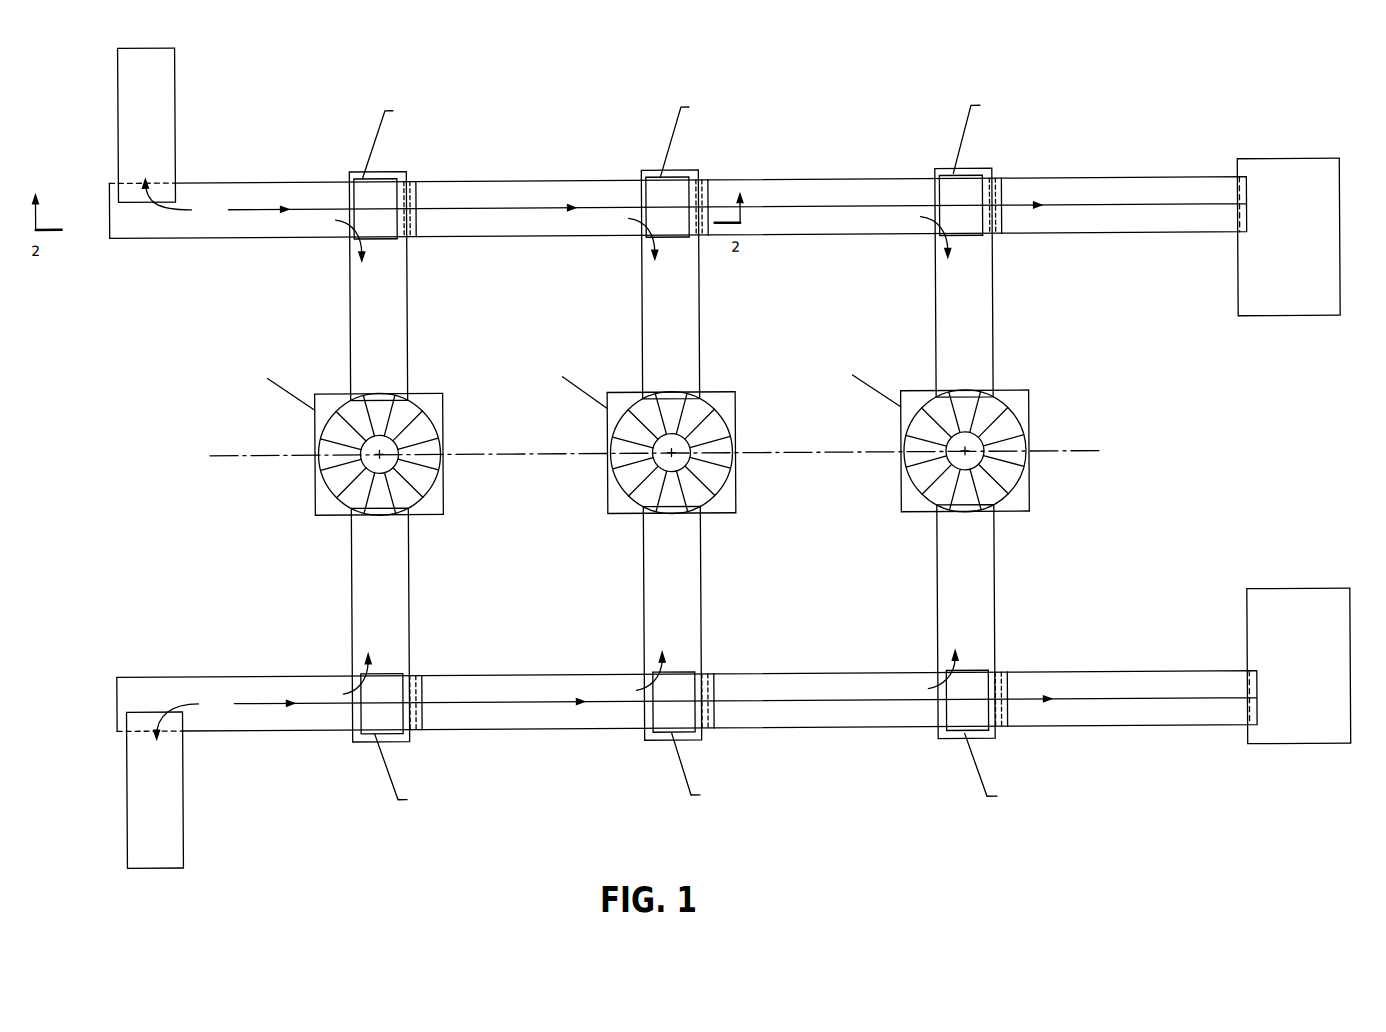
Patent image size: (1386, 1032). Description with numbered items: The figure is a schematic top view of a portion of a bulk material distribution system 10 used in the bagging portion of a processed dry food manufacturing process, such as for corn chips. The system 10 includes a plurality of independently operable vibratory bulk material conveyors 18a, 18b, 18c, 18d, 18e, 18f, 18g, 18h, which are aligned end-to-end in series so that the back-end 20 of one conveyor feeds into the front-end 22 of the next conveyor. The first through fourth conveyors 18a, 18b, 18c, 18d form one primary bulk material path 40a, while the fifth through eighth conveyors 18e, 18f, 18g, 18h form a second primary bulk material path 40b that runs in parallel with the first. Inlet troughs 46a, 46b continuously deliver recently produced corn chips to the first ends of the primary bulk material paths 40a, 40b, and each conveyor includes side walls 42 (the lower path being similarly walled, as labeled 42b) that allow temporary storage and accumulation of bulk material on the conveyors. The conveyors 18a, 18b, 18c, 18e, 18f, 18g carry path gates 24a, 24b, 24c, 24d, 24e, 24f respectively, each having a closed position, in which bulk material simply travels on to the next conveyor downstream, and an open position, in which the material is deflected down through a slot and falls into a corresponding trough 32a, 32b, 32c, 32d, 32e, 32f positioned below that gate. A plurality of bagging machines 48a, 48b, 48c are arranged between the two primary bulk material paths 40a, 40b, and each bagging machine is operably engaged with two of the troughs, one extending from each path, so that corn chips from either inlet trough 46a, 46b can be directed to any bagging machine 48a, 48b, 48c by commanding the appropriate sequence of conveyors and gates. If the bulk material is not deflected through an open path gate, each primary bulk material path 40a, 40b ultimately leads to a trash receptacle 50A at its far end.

The bulk material distribution system 10 is at (1182, 93).
The first conveyor 18a is at (243, 195).
The second conveyor 18b is at (503, 195).
The third conveyor 18c is at (830, 193).
The fourth conveyor 18d is at (1125, 197).
The fifth conveyor 18e is at (247, 722).
The sixth conveyor 18f is at (520, 730).
The seventh conveyor 18g is at (833, 717).
The eighth conveyor 18h is at (1130, 706).
The back-end 20 is at (418, 195).
The front-end 22 is at (108, 226).
The first gate 24a is at (372, 200).
The second gate 24b is at (663, 198).
The third gate 24c is at (960, 195).
The fourth gate 24d is at (377, 717).
The fifth gate 24e is at (670, 714).
The sixth gate 24f is at (963, 710).
The first trough 32a is at (408, 285).
The second trough 32b is at (700, 283).
The third trough 32c is at (994, 280).
The fourth trough 32d is at (408, 590).
The fifth trough 32e is at (700, 588).
The sixth trough 32f is at (994, 588).
The primary bulk material path 40a is at (547, 205).
The primary bulk material path 40b is at (560, 730).
The side walls 42 is at (218, 181).
The conveyor feed path 42b is at (476, 729).
The inlet trough 46a is at (118, 73).
The inlet trough 46b is at (125, 840).
The bagging machine 48a is at (443, 493).
The bagging machine 48b is at (736, 492).
The bagging machine 48c is at (1029, 490).
The trash receptacle 50A is at (1239, 292).